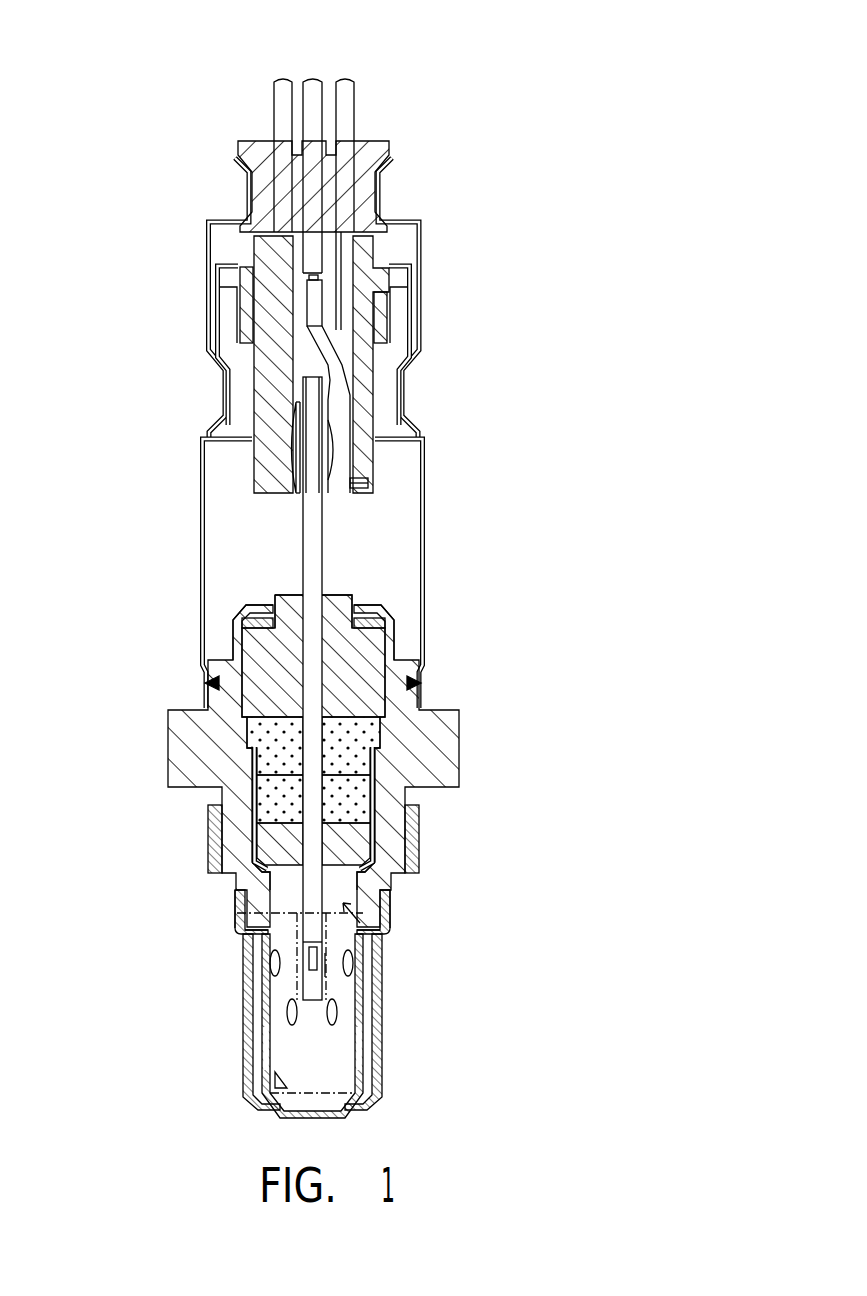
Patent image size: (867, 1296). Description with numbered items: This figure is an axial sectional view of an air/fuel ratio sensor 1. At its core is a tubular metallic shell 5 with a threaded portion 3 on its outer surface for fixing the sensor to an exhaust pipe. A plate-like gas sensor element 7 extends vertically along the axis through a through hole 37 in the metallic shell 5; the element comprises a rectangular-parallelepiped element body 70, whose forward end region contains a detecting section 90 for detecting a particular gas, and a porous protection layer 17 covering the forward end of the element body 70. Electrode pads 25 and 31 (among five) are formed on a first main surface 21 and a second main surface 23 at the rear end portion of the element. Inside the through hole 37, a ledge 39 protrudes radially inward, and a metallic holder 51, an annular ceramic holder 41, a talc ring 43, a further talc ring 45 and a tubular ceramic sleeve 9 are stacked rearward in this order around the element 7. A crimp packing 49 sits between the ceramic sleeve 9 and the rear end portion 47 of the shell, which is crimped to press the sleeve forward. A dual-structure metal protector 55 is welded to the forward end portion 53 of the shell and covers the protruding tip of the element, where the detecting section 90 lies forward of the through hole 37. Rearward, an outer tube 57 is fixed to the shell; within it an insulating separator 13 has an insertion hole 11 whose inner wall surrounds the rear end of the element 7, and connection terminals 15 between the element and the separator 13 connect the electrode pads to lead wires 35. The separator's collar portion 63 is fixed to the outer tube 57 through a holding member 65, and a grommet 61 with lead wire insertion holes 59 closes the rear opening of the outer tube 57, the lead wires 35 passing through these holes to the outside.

The air/fuel ratio sensor 1 is at (502, 124).
The threaded portion 3 is at (207, 833).
The metallic shell 5 is at (207, 740).
The gas sensor element 7 is at (317, 770).
The ceramic sleeve 9 is at (362, 682).
The insertion hole 11 is at (310, 357).
The separator 13 is at (262, 418).
The connection terminals 15 is at (335, 352).
The porous protection layer 17 is at (237, 917).
The first main surface 21 is at (247, 753).
The second main surface 23 is at (277, 735).
The electrode pad 25 is at (180, 478).
The electrode pad 31 is at (427, 482).
The lead wires 35 is at (313, 83).
The through hole 37 is at (373, 930).
The ledge 39 is at (270, 880).
The ceramic holder 41 is at (350, 843).
The talc ring 43 is at (357, 797).
The talc ring 45 is at (260, 727).
The rear end portion 47 is at (387, 607).
The crimp packing 49 is at (386, 633).
The metallic holder 51 is at (385, 893).
The forward end portion 53 is at (388, 913).
The protector 55 is at (380, 983).
The outer tube 57 is at (403, 400).
The lead wire insertion holes 59 is at (257, 197).
The grommet 61 is at (347, 190).
The collar portion 63 is at (240, 268).
The holding member 65 is at (418, 293).
The element body 70 is at (303, 942).
The detecting section 90 is at (305, 960).